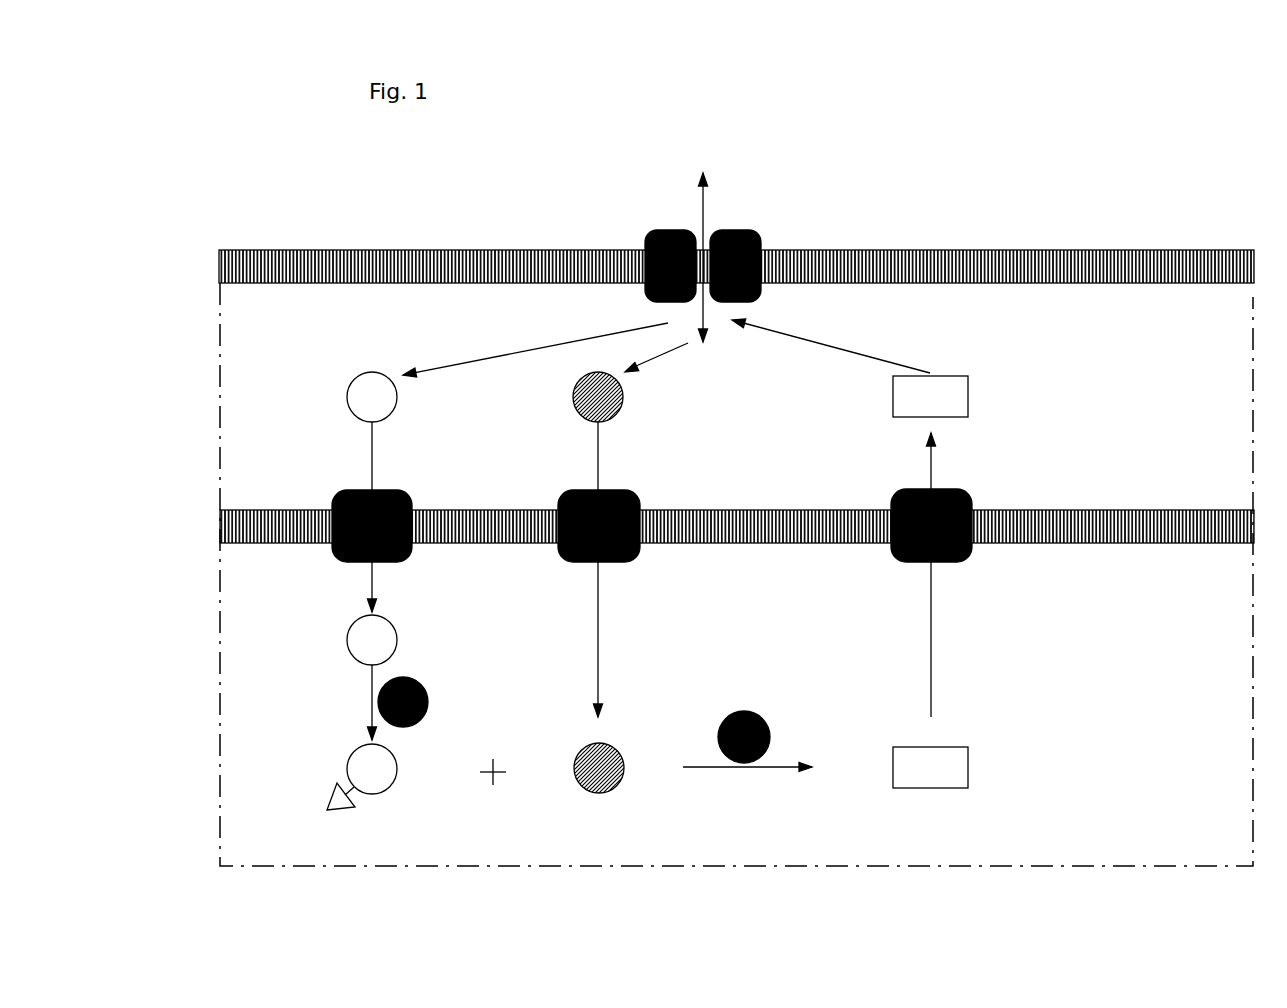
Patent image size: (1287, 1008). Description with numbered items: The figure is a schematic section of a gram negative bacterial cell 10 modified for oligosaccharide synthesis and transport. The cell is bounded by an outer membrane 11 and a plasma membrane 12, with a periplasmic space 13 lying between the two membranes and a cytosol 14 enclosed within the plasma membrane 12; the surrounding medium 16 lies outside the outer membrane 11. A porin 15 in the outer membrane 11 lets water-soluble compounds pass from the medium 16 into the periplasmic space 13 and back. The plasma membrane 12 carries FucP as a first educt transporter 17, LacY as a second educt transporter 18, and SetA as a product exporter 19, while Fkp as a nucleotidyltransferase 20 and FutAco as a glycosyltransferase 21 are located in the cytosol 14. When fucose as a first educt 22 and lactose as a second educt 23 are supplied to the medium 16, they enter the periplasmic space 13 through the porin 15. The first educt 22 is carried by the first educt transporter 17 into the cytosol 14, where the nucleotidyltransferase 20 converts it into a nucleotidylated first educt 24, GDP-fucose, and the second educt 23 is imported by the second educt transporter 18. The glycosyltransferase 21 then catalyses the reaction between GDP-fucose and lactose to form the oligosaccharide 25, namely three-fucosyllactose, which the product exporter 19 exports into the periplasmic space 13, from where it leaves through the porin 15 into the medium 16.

The gram negative bacterial cell 10 is at (1214, 180).
The outer membrane 11 is at (287, 254).
The plasma membrane 12 is at (272, 514).
The periplasmic space 13 is at (235, 403).
The cytosol 14 is at (246, 699).
The porin 15 is at (645, 235).
The medium 16 is at (281, 140).
The first educt transporter 17 is at (345, 565).
The second educt transporter 18 is at (608, 562).
The product exporter 19 is at (968, 555).
The nucleotidyltransferase 20 is at (428, 700).
The glycosyltransferase 21 is at (758, 712).
The first educt 22 is at (353, 373).
The second educt 23 is at (617, 420).
The nucleotidylated first educt 24 is at (347, 765).
The oligosaccharide 25 is at (935, 788).